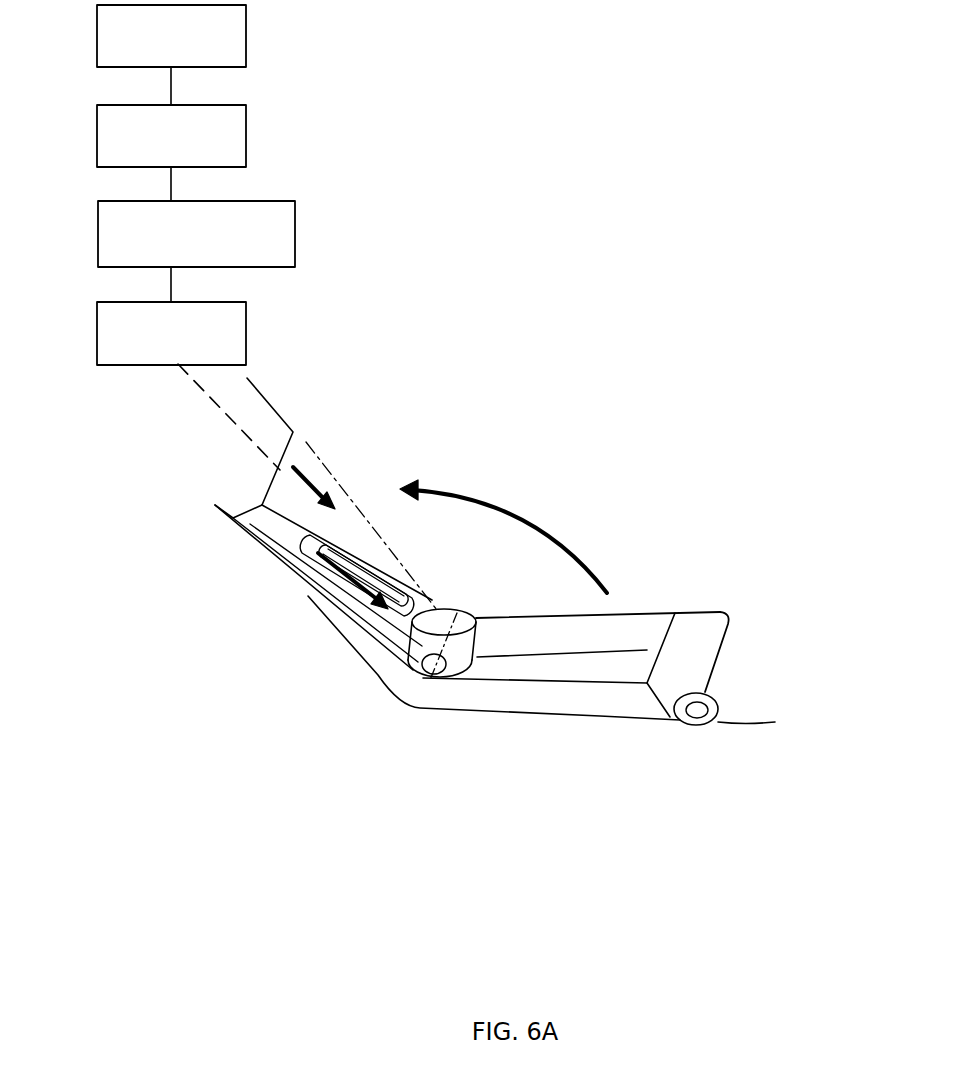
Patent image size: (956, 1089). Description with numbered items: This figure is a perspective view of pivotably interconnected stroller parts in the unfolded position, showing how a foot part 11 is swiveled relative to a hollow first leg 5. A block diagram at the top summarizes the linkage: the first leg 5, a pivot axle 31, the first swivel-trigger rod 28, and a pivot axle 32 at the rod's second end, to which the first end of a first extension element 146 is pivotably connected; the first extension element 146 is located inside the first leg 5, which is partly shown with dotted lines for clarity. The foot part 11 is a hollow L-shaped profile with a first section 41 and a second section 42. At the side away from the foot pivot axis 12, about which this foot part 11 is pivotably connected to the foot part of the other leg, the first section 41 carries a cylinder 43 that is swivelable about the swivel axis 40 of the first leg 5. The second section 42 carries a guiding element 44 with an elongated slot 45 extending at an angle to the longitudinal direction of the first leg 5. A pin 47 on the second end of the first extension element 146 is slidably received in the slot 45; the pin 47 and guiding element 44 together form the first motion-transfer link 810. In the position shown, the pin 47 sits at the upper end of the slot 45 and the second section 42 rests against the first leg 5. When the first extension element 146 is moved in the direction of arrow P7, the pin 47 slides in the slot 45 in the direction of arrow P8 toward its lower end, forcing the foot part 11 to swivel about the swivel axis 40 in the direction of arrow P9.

The first leg 5 is at (246, 37).
The first-end pivot axle 31 is at (246, 135).
The first swivel-trigger rod 28 is at (295, 232).
The second-end pivot axle 32 is at (97, 335).
The first extension element 146 is at (215, 402).
The guiding element 44 is at (357, 555).
The slot 45 is at (385, 590).
The cylinder 43 is at (463, 630).
The swivel axis 40 is at (441, 670).
The first section 41 is at (628, 637).
The foot part 11 is at (750, 643).
The foot pivot axis 12 is at (695, 714).
The second section 42 is at (340, 620).
The pin 47 is at (340, 547).
The first motion-transfer link 810 is at (380, 632).
The direction of movement of the first extension element P7 is at (322, 467).
The direction of sliding of the pin P8 is at (325, 585).
The direction of swiveling of the foot part P9 is at (518, 520).